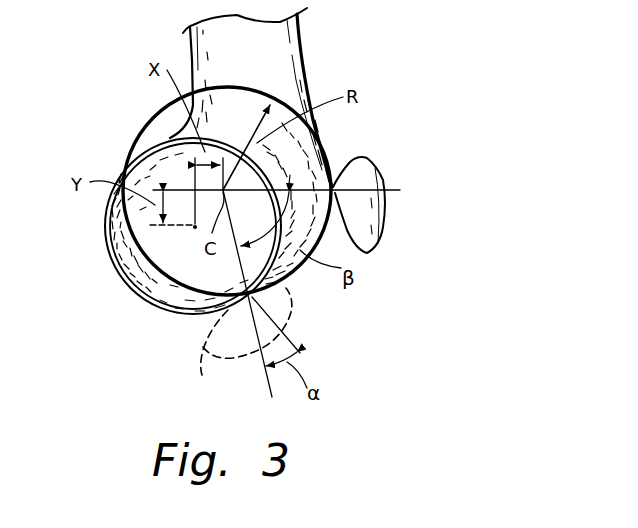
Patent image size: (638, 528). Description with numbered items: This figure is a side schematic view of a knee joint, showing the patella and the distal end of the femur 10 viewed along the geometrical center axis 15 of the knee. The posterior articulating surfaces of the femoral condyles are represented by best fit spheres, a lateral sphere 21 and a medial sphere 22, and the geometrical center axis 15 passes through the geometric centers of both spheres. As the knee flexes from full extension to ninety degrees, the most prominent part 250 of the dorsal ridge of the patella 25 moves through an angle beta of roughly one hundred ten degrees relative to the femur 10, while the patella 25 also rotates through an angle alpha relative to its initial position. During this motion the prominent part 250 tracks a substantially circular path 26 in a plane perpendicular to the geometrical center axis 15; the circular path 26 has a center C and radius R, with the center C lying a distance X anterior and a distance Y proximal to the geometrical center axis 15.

The femur 10 is at (306, 41).
The geometrical center axis 15 is at (192, 230).
The lateral sphere 21 is at (113, 257).
The medial sphere 22 is at (142, 297).
The patella 25 is at (405, 223).
The most prominent part of the dorsal ridge of the patella 250 is at (337, 178).
The circular path 26 is at (323, 130).